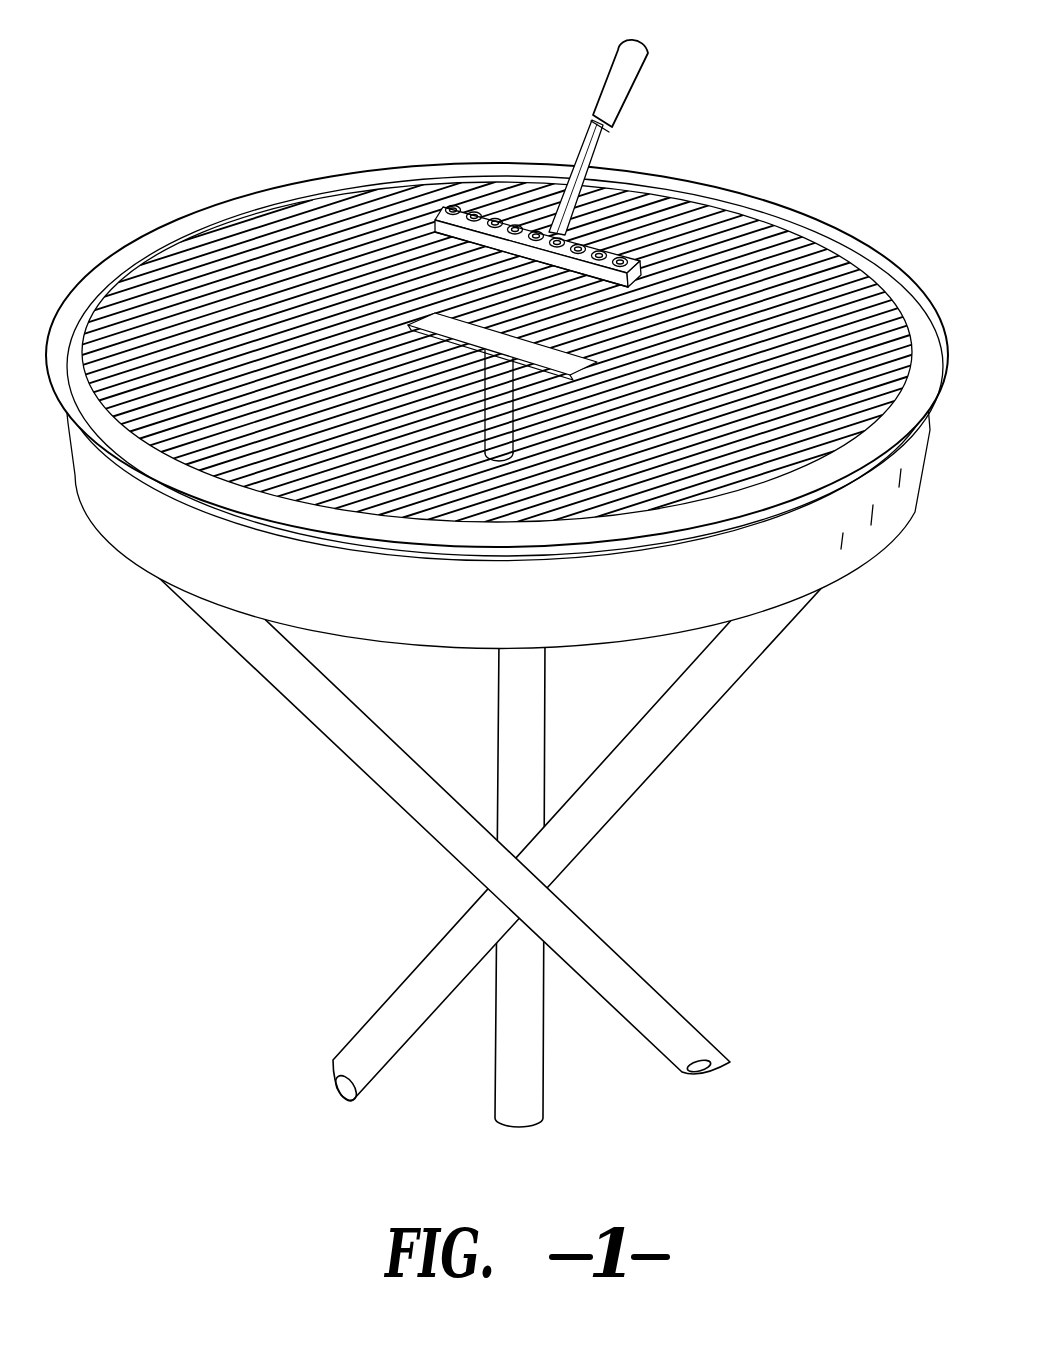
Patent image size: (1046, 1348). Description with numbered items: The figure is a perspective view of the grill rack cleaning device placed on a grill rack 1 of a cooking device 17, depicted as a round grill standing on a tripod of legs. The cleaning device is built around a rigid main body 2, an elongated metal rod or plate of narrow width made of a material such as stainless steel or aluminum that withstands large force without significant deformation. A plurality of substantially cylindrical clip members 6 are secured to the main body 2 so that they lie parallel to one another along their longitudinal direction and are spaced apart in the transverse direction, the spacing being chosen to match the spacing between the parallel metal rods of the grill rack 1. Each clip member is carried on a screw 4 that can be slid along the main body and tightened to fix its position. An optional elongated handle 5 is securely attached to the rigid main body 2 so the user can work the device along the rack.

The grill grate 1 is at (711, 243).
The rigid main body 2 is at (430, 225).
The screw 4 is at (453, 204).
The elongated handle 5 is at (596, 82).
The cylindrical clip members 6 is at (438, 238).
The cooking device 17 is at (766, 549).